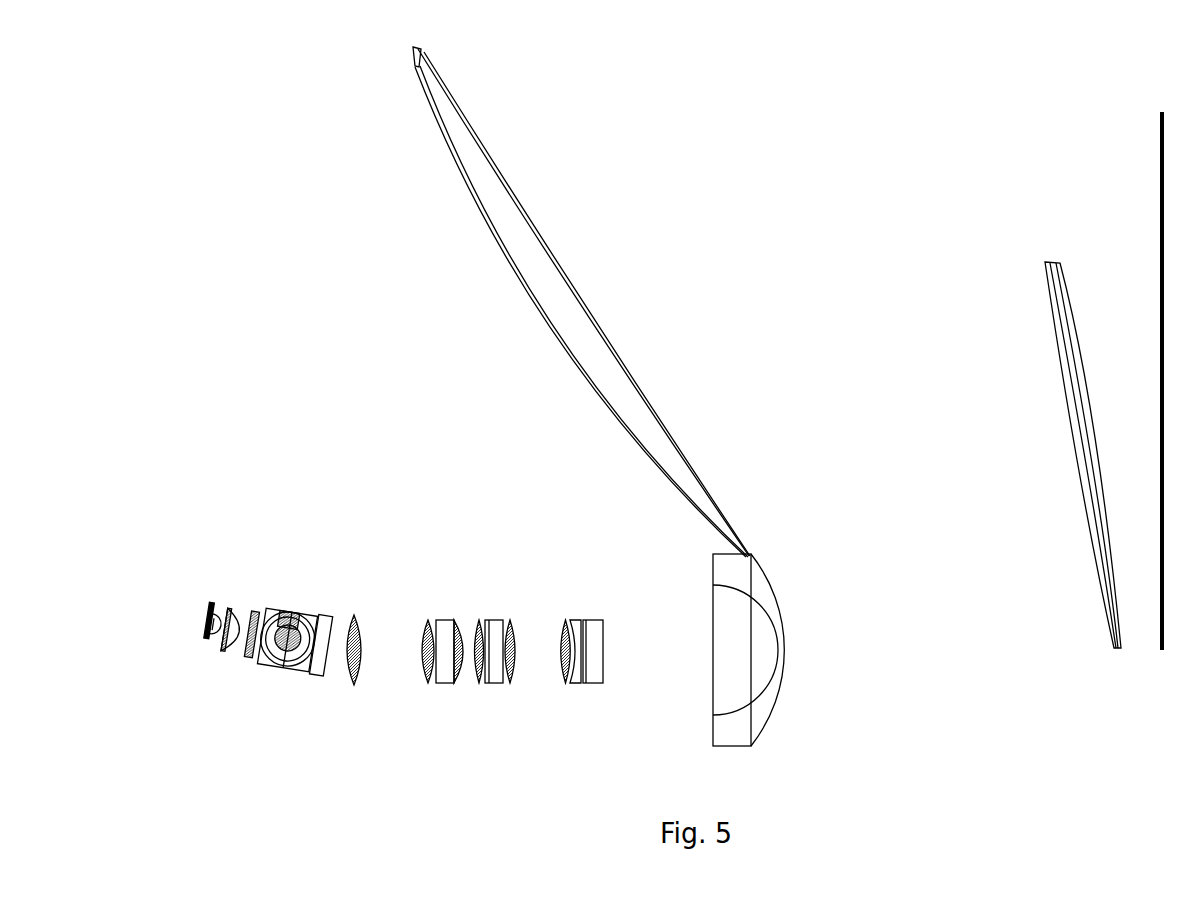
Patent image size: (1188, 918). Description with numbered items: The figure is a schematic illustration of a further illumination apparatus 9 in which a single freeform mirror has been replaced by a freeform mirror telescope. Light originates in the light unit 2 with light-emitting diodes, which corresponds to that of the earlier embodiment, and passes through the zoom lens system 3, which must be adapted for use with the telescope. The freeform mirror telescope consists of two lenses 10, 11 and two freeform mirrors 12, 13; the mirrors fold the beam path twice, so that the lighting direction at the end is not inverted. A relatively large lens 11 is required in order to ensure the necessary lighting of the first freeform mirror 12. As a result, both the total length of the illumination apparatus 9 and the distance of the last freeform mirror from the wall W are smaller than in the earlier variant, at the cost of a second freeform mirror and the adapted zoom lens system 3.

The light unit 2 is at (265, 668).
The zoom lens system 3 is at (353, 693).
The illumination apparatus 9 is at (700, 185).
The lens 10 is at (590, 683).
The lens 11 is at (787, 712).
The first freeform mirror 12 is at (1115, 658).
The freeform mirror 13 is at (513, 152).
The wall W is at (1158, 226).